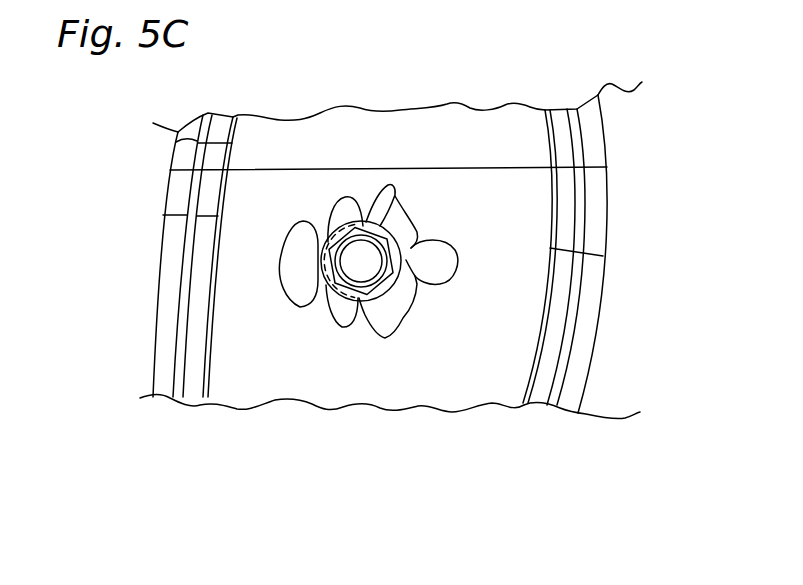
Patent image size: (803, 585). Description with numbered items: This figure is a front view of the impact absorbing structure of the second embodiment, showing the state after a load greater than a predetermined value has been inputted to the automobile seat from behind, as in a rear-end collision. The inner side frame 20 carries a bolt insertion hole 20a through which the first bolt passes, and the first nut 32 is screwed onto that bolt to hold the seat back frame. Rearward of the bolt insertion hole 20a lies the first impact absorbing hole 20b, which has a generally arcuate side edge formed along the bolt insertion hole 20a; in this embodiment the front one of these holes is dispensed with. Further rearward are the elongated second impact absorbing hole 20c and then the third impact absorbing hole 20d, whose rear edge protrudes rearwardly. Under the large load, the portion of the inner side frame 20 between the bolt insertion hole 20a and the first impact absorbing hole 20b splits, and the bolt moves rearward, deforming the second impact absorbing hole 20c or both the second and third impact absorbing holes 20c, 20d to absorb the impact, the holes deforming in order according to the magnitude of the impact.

The inner side frame 20 is at (597, 292).
The bolt insertion hole 20a is at (444, 270).
The first impact absorbing hole 20b is at (389, 328).
The second impact absorbing hole 20c is at (348, 318).
The third impact absorbing hole 20d is at (297, 286).
The first nut 32 is at (397, 195).